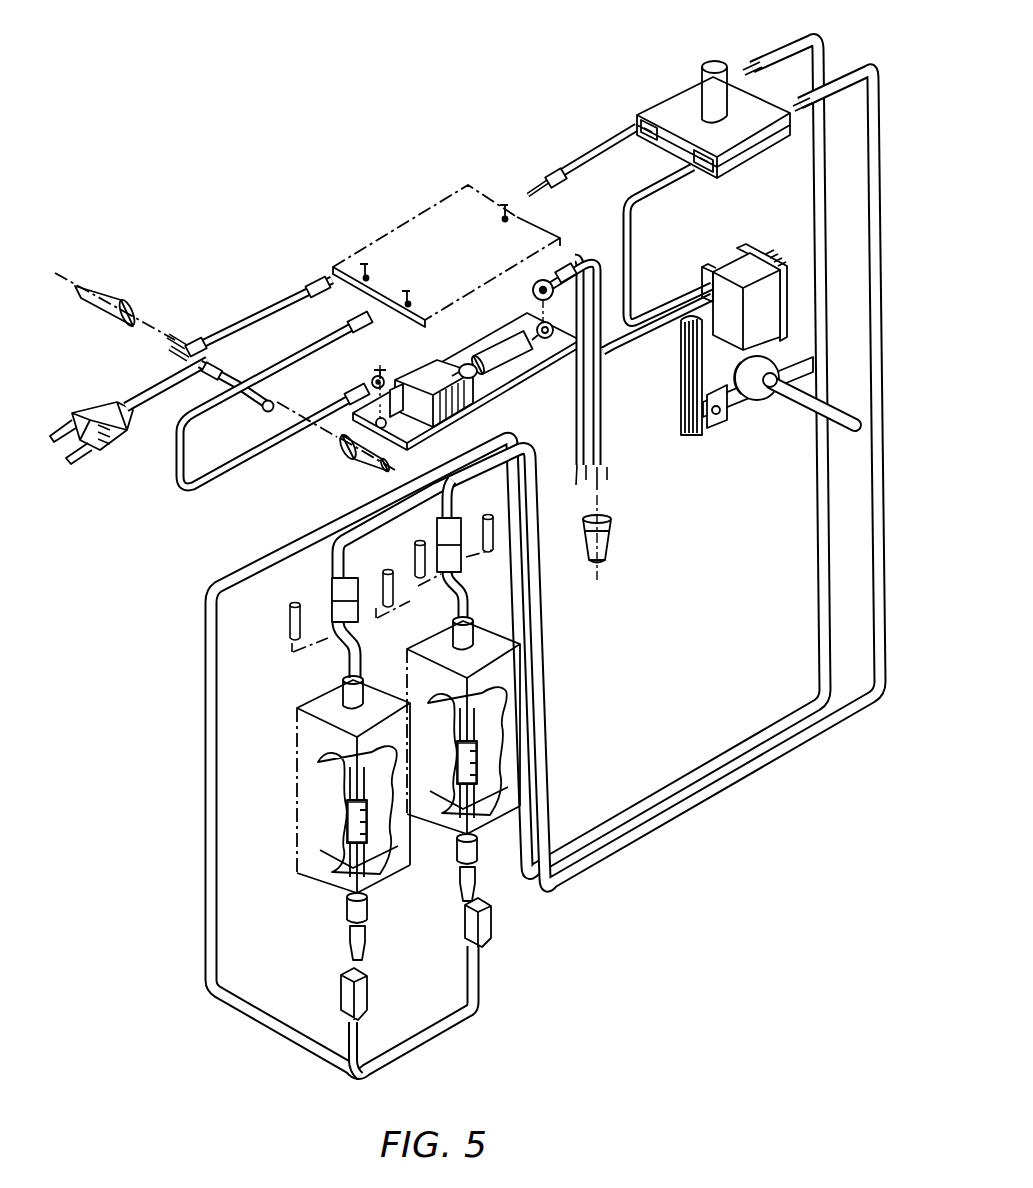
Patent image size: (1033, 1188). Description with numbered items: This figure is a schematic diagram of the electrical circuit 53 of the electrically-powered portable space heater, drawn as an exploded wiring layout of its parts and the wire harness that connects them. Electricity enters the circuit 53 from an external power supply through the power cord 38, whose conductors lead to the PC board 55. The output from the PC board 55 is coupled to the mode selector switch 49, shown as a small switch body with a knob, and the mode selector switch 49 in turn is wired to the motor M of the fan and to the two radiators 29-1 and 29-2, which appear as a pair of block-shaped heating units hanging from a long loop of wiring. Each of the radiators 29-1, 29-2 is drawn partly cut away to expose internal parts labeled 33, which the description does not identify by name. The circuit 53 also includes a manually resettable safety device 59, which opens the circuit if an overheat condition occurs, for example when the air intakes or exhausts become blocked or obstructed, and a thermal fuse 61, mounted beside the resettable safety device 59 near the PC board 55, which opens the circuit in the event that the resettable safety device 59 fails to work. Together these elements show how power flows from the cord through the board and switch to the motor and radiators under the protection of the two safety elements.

The radiator 29-1 is at (325, 738).
The radiator 29-2 is at (497, 668).
The heating element contacts 33 is at (464, 765).
The power cord 38 is at (107, 413).
The mode selector switch 49 is at (673, 108).
The electrical circuit 53 is at (679, 860).
The PC board 55 is at (433, 271).
The manually resettable safety device 59 is at (407, 382).
The thermal fuse 61 is at (500, 352).
The motor M is at (716, 430).